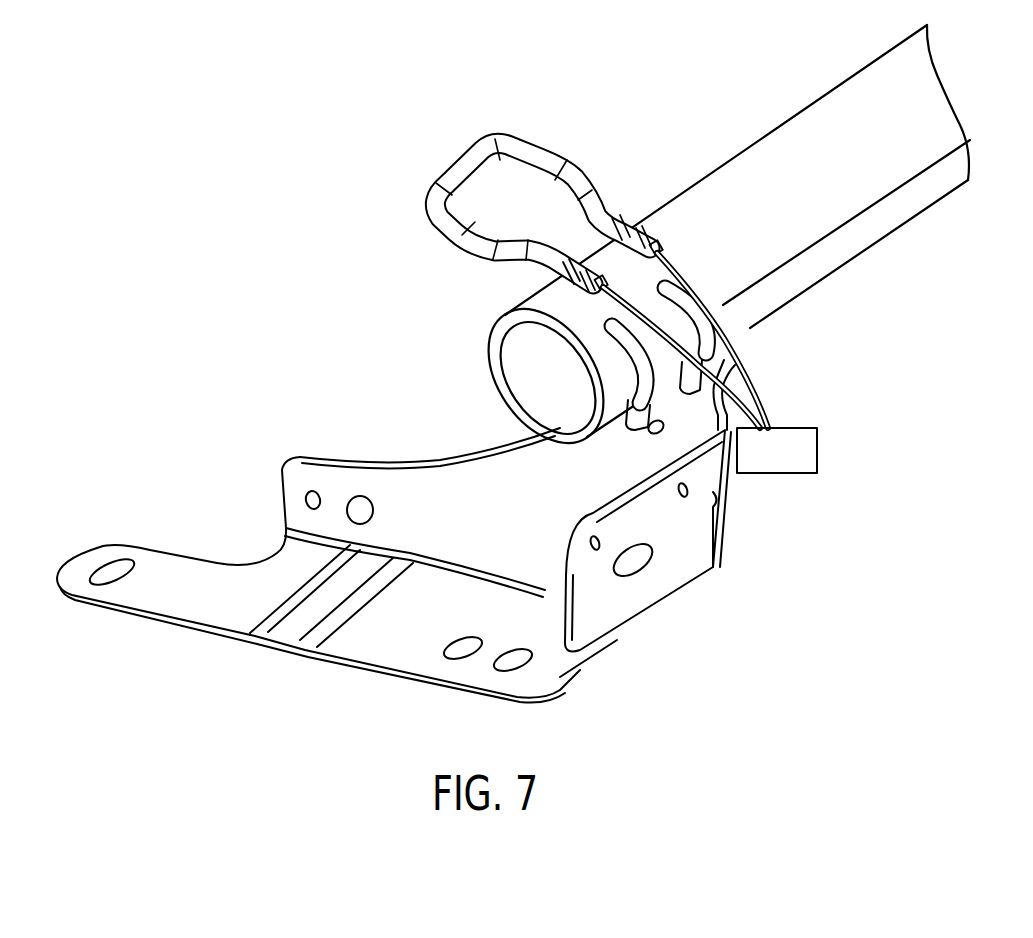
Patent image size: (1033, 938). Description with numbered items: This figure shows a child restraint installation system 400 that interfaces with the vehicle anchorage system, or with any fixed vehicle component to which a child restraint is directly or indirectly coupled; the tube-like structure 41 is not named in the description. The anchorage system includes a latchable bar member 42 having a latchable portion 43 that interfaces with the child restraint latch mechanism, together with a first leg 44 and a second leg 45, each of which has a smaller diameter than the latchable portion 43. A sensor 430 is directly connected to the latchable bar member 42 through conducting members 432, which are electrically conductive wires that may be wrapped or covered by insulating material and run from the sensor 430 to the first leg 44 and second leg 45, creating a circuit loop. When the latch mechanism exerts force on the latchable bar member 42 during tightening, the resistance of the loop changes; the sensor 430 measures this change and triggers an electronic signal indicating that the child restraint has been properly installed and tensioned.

The tube 41 is at (800, 135).
The latchable bar member 42 is at (418, 258).
The latchable portion 43 is at (450, 178).
The first leg 44 is at (563, 278).
The second leg 45 is at (625, 225).
The child restraint installation system 400 is at (864, 336).
The sensor 430 is at (778, 476).
The conducting members 432 is at (725, 355).